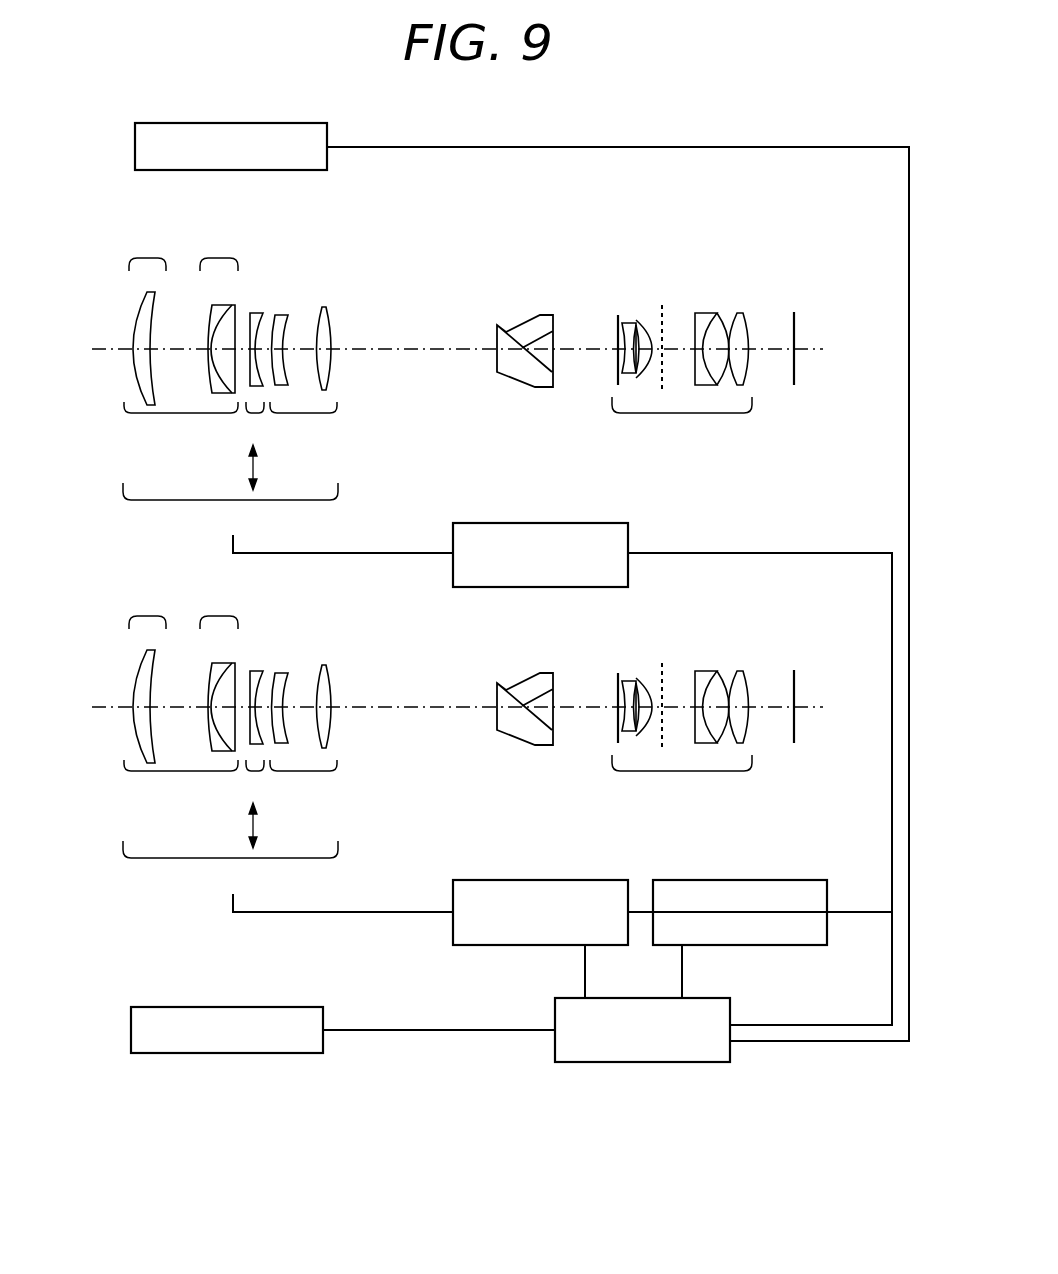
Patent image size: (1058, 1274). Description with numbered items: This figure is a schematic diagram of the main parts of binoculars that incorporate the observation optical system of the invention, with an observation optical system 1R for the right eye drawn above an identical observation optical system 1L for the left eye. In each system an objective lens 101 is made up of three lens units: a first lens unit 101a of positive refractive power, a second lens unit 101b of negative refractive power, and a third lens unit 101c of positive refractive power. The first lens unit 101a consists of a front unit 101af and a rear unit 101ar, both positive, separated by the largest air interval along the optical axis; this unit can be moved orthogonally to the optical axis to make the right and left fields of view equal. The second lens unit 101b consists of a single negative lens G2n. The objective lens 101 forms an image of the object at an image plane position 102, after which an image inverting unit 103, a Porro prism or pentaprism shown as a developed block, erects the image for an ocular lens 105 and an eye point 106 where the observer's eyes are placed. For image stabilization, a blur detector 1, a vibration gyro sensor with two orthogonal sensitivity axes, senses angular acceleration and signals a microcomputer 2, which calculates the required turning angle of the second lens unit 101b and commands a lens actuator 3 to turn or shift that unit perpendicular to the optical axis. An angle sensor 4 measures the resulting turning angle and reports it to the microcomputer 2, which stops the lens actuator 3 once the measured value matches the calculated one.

The blur detector 1 is at (796, 946).
The microcomputer 2 is at (683, 1063).
The lens actuator 3 is at (453, 571).
The angle sensor 4 is at (193, 122).
The observation optical system for a right eye 1R is at (431, 352).
The observation optical system for a left eye 1L is at (432, 710).
The objective lens 101 is at (228, 560).
The first lens unit 101a is at (183, 515).
The front unit 101af is at (147, 495).
The rear unit 101ar is at (219, 489).
The second lens unit 101b is at (263, 517).
The negative lens G2n is at (255, 313).
The third lens unit 101c is at (303, 554).
The image plane position 102 is at (667, 305).
The image inverting unit 103 is at (528, 320).
The ocular lens 105 is at (682, 558).
The eye point 106 is at (797, 372).